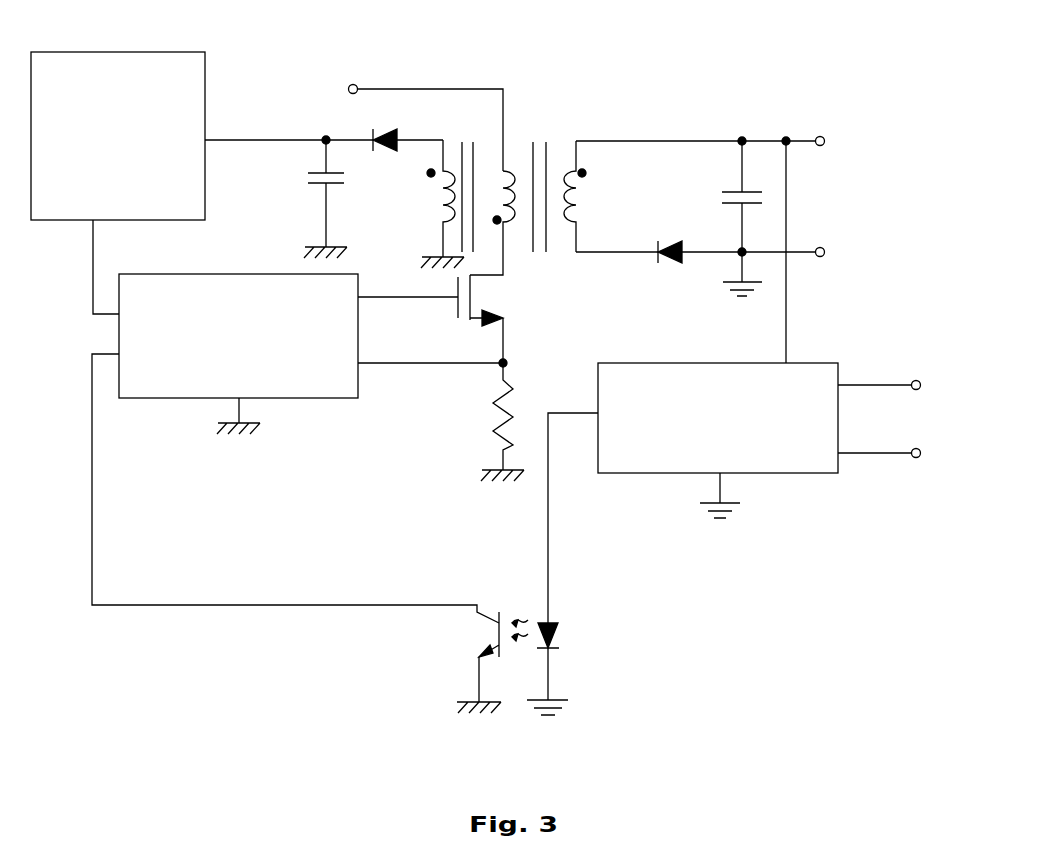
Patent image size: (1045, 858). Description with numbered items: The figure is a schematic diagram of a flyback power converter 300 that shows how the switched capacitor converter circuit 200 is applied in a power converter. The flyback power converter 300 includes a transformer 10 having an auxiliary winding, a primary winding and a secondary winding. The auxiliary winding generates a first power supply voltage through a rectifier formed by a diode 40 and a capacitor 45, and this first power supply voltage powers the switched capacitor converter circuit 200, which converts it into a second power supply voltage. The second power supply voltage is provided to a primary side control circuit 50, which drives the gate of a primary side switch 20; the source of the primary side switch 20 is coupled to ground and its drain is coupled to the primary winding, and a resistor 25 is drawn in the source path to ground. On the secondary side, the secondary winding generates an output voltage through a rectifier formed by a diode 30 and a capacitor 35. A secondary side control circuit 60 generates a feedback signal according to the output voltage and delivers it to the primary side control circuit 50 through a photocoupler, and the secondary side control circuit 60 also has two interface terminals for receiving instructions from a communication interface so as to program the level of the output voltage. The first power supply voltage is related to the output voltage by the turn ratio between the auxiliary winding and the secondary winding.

The flyback power converter 300 is at (130, 43).
The switched capacitor converter circuit 200 is at (137, 209).
The primary side control circuit 50 is at (280, 375).
The secondary side control circuit 60 is at (700, 467).
The transformer 10 is at (530, 132).
The primary side switch 20 is at (472, 319).
The sense resistor 25 is at (492, 422).
The diode 30 is at (669, 268).
The capacitor 35 is at (726, 218).
The diode 40 is at (384, 128).
The capacitor 45 is at (311, 199).